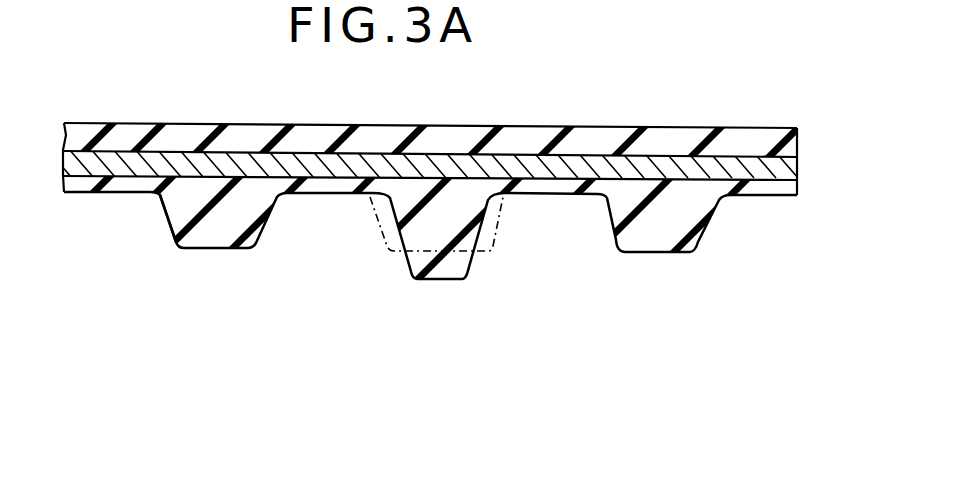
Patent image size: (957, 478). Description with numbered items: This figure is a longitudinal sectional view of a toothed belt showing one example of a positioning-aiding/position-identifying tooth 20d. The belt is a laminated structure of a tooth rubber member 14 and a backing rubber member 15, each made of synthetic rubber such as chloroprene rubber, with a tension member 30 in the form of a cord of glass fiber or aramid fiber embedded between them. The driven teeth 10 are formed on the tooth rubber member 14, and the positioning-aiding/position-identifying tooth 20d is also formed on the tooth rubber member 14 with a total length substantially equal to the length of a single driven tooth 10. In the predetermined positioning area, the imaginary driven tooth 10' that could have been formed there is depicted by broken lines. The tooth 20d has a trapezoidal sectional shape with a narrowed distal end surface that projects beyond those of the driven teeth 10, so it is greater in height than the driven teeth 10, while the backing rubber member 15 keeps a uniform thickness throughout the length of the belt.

The driven tooth 10 is at (430, 274).
The imaginary driven tooth 10' is at (415, 275).
The tooth rubber member 14 is at (157, 205).
The backing rubber member 15 is at (547, 138).
The positioning-aiding/position-identifying tooth 20d is at (462, 265).
The tension member 30 is at (770, 173).